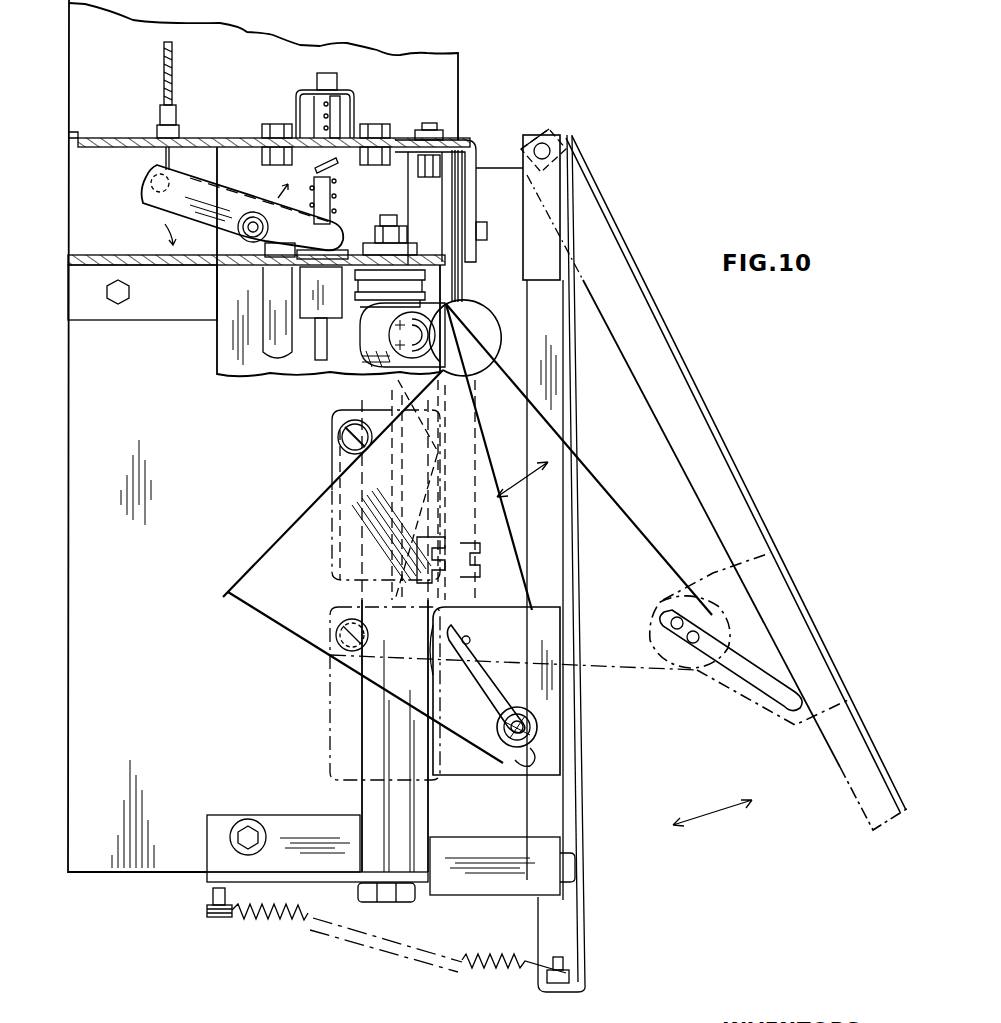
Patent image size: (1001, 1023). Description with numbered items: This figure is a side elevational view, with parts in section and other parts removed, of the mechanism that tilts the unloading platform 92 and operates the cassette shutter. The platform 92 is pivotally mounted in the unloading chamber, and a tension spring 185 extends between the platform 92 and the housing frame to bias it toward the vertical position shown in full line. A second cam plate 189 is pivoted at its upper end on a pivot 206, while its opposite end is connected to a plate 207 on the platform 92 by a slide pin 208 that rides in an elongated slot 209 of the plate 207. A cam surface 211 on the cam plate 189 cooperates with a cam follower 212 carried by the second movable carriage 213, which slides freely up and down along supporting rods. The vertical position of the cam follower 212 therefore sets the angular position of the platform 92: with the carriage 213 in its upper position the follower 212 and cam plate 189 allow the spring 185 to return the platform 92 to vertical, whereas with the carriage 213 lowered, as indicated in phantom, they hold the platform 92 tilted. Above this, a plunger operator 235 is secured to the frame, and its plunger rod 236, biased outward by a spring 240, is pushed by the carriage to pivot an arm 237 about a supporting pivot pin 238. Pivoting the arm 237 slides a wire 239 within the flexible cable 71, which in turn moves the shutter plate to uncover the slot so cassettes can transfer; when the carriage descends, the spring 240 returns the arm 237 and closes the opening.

The flexible cable 71 is at (175, 84).
The wire 239 is at (163, 152).
The arm 237 is at (156, 207).
The supporting pivot pin 238 is at (255, 212).
The spring 240 is at (334, 178).
The plunger operator 235 is at (303, 284).
The plunger rod 236 is at (310, 358).
The pivot 206 is at (435, 334).
The cam surface 211 is at (312, 512).
The cam follower 212 is at (337, 437).
The second movable carriage 213 is at (331, 458).
The second cam plate 189 is at (306, 597).
The plate 207 is at (512, 780).
The elongated slot 209 is at (468, 643).
The slide pin 208 is at (499, 760).
The platform 92 is at (865, 735).
The tension spring 185 is at (490, 968).